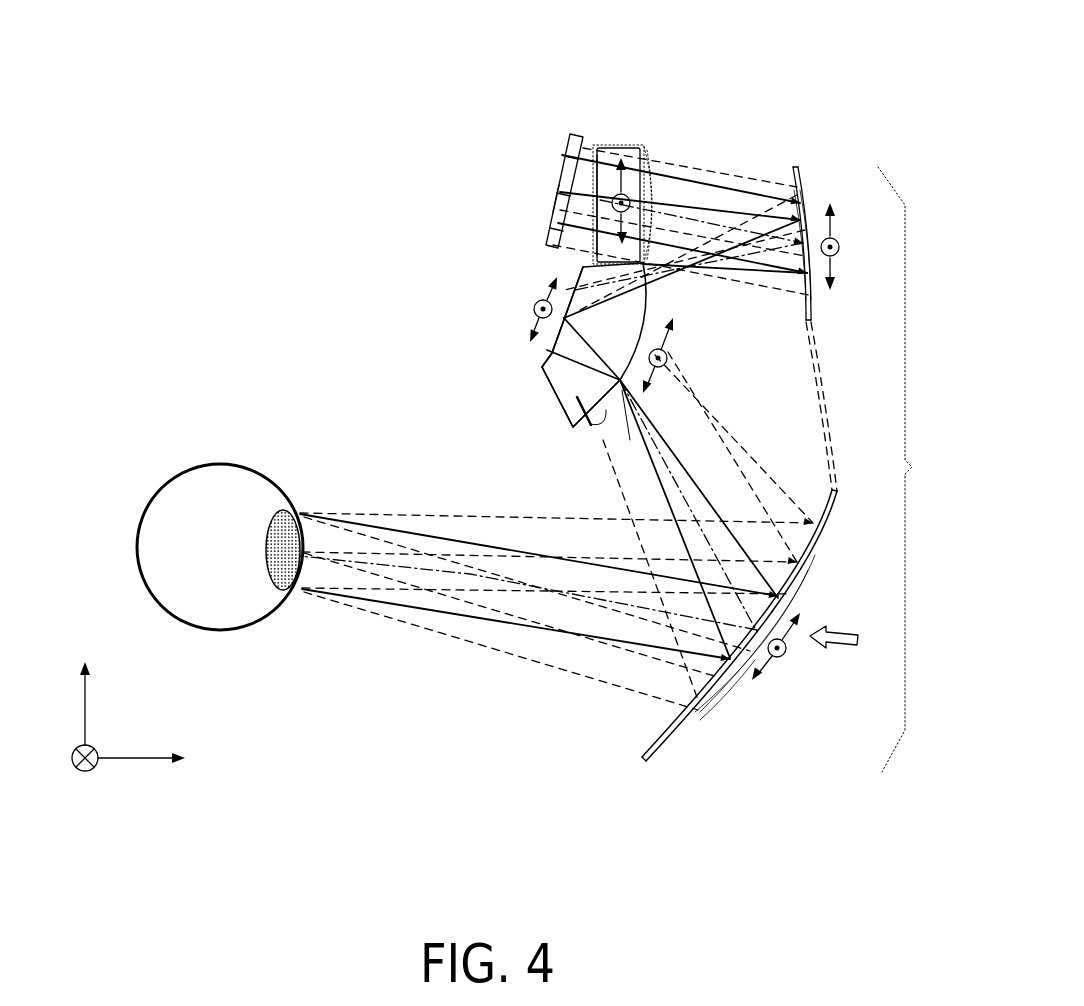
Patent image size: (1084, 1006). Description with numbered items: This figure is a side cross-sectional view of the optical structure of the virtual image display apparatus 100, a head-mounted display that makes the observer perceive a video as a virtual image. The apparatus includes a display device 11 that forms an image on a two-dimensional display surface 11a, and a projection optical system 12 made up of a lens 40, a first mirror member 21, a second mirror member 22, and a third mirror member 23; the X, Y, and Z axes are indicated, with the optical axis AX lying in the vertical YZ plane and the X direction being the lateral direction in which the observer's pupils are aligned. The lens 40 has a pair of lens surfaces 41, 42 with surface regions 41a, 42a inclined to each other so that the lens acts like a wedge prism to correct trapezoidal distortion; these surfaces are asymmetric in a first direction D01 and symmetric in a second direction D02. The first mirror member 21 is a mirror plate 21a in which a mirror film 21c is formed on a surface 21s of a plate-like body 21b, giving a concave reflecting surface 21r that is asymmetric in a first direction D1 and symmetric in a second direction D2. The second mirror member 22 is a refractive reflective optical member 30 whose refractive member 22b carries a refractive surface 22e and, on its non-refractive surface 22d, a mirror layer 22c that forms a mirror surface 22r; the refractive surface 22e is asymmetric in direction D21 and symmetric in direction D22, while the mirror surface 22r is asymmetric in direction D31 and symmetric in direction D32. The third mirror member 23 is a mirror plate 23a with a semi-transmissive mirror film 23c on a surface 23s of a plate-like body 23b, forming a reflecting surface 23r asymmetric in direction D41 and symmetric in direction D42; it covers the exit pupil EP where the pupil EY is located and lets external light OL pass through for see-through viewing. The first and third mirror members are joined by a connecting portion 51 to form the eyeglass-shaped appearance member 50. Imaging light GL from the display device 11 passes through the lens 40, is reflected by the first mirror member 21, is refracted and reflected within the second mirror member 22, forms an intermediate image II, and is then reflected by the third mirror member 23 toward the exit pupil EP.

The virtual image display apparatus 100 is at (385, 152).
The display device 11 is at (567, 183).
The display surface 11a is at (553, 196).
The lens 40 is at (657, 48).
The lens surface 41 is at (586, 160).
The surface region 41a is at (592, 183).
The lens surface 42 is at (646, 152).
The surface region 42a is at (653, 177).
The first mirror member 21 is at (787, 195).
The mirror plate 21a is at (797, 170).
The mirror film 21c is at (861, 201).
The reflecting surface 21r is at (808, 217).
The plate-like body 21b is at (818, 222).
The surface 21s is at (812, 318).
The connecting portion 51 is at (832, 447).
The projection optical system 12 is at (918, 469).
The second mirror member 22 is at (484, 344).
The refractive reflective optical member 30 is at (440, 314).
The refractive member 22b is at (567, 397).
The mirror layer 22c is at (550, 357).
The non-refractive surface 22d is at (547, 367).
The refractive surface 22e is at (598, 412).
The mirror surface 22r is at (545, 372).
The third mirror member 23 is at (711, 678).
The mirror plate 23a is at (643, 763).
The plate-like body 23b is at (690, 722).
The mirror film 23c is at (773, 709).
The reflecting surface 23r is at (707, 722).
The surface 23s is at (743, 720).
The appearance member 50 is at (845, 765).
The pupil EY is at (282, 540).
The exit pupil EP is at (303, 583).
The optical axis AX is at (745, 310).
The imaging light GL is at (710, 162).
The external light OL is at (830, 648).
The intermediate image II is at (620, 385).
The first direction D01 is at (580, 230).
The second direction D02 is at (590, 203).
The first direction D1 is at (838, 233).
The second direction D2 is at (836, 265).
The first direction D21 is at (673, 340).
The second direction D22 is at (677, 367).
The first direction D31 is at (530, 293).
The second direction D32 is at (530, 308).
The first direction D41 is at (803, 620).
The second direction D42 is at (780, 667).
The X direction X is at (70, 777).
The Y direction Y is at (66, 695).
The Z direction Z is at (146, 782).